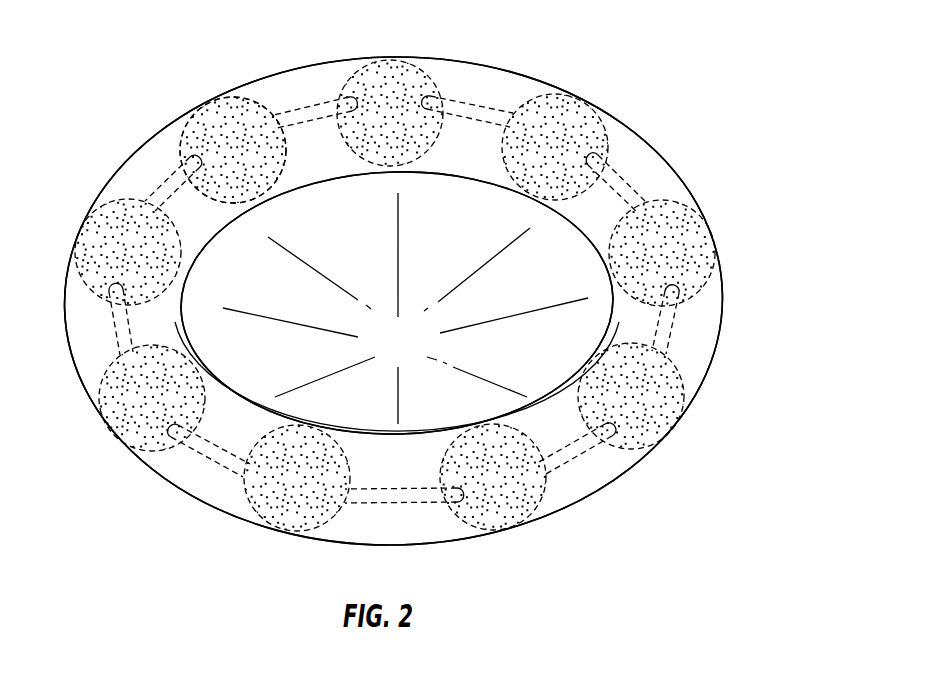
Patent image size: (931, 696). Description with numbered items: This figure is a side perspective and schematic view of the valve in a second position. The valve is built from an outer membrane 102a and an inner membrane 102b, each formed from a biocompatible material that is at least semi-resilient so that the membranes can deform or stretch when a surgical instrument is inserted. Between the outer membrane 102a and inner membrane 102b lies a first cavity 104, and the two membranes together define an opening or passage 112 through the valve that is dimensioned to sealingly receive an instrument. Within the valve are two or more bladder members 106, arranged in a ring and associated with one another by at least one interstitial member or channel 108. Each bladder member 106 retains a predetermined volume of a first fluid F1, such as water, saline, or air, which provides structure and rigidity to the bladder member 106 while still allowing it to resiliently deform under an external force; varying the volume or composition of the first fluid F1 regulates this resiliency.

The outer membrane 102a is at (721, 282).
The inner membrane 102b is at (603, 338).
The first cavity 104 is at (592, 472).
The bladder member 106 is at (412, 65).
The interstitial member or channel 108 is at (478, 110).
The opening or passage 112 is at (453, 300).
The first fluid F1 is at (208, 123).